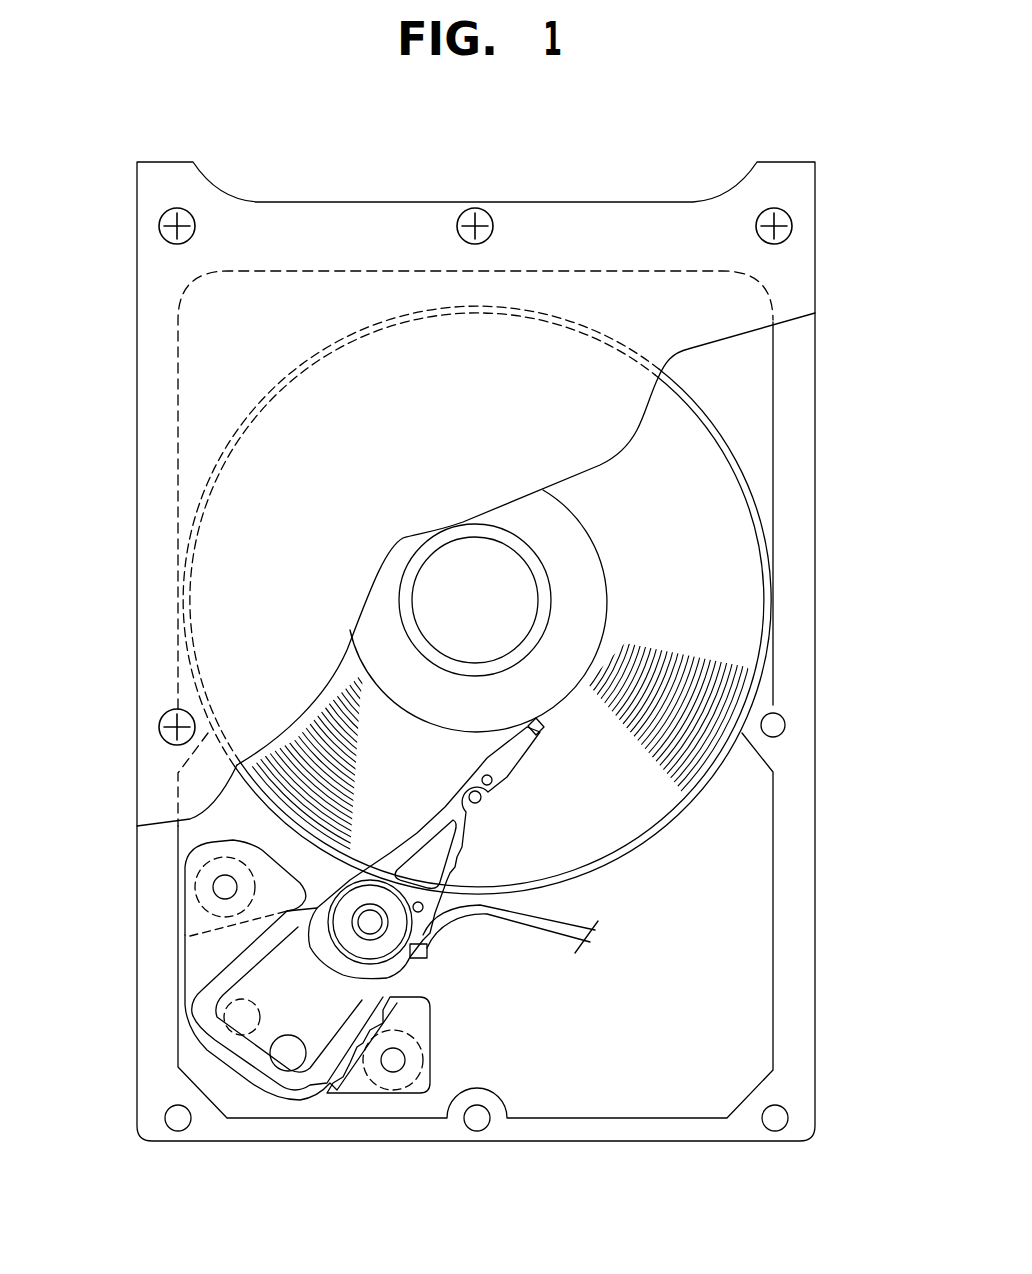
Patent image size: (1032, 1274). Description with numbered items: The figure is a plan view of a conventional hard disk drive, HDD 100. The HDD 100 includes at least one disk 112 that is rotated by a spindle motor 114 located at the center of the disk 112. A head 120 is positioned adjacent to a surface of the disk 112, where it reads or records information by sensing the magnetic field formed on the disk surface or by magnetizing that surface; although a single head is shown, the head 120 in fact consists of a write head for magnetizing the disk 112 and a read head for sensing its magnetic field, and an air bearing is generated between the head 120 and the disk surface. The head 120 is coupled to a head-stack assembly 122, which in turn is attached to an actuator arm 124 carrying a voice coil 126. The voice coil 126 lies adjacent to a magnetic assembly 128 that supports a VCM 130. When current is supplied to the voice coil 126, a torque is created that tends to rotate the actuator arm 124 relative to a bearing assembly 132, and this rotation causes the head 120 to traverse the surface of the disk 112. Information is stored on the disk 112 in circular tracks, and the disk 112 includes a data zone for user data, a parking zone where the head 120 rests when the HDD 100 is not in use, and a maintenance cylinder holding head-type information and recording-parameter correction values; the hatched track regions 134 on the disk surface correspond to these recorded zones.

The HDD 100 is at (818, 129).
The disk 112 is at (744, 527).
The spindle motor 114 is at (452, 575).
The head 120 is at (538, 733).
The head-stack assembly 122 is at (500, 770).
The actuator arm 124 is at (283, 940).
The voice coil 126 is at (213, 1008).
The magnetic assembly 128 is at (223, 955).
The VCM 130 is at (340, 1077).
The bearing assembly 132 is at (383, 933).
The data zone 134 is at (335, 718).